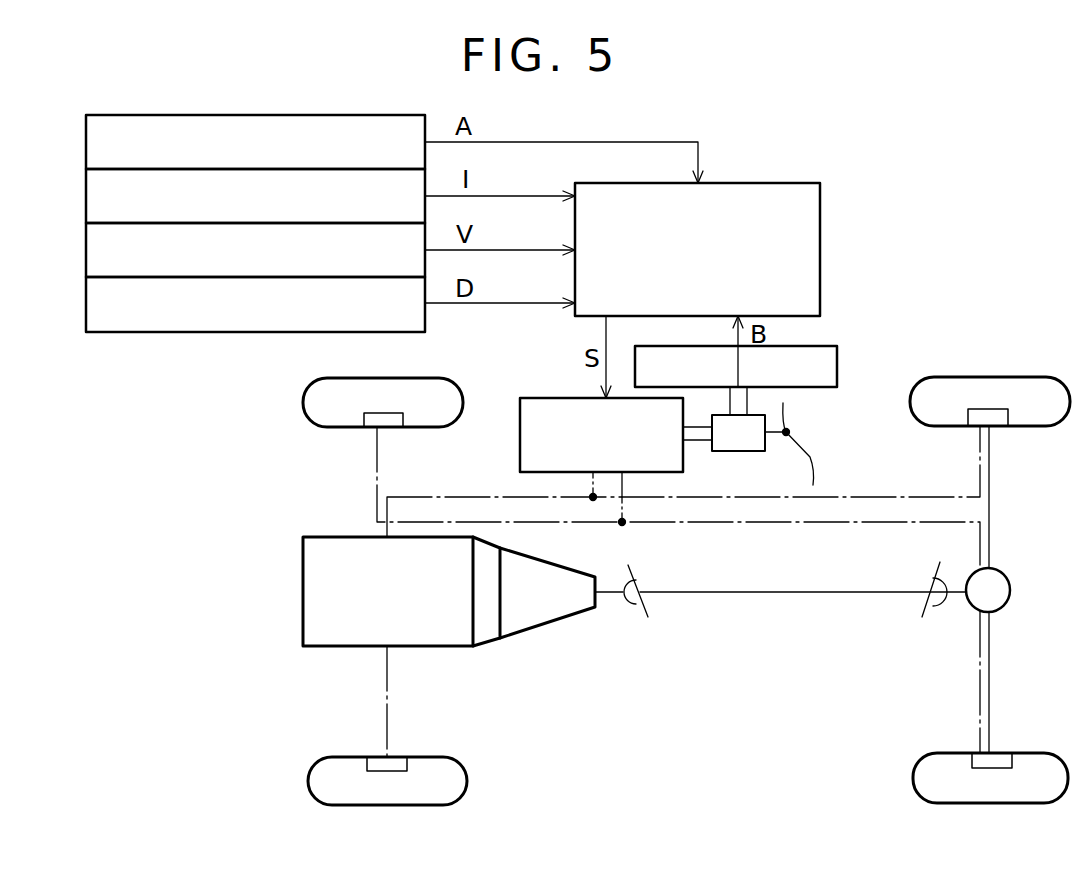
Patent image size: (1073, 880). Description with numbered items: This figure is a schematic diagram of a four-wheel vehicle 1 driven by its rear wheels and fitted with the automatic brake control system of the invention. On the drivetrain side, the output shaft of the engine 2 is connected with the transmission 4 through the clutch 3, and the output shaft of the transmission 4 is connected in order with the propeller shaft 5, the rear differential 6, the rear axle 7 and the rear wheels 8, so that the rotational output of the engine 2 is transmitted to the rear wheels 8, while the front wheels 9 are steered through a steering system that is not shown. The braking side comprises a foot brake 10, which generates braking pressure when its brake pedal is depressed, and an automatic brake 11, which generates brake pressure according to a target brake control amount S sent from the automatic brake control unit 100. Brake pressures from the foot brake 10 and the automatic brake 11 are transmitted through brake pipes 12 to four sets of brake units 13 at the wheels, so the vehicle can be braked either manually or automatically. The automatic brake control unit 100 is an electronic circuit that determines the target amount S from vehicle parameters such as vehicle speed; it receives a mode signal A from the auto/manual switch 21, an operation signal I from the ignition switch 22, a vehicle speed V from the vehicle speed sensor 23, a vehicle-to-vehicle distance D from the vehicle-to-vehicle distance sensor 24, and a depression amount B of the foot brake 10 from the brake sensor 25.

The four-wheel vehicle 1 is at (731, 743).
The engine 2 is at (460, 633).
The clutch 3 is at (490, 630).
The transmission 4 is at (573, 602).
The propeller shaft 5 is at (777, 598).
The rear differential 6 is at (1012, 568).
The rear axle 7 is at (992, 668).
The rear wheels 8 is at (1022, 377).
The front wheels 9 is at (337, 378).
The foot brake 10 is at (752, 452).
The automatic brake 11 is at (540, 397).
The brake pipes 12 is at (722, 498).
The brake units 13 is at (367, 420).
The auto/manual switch 21 is at (86, 130).
The ignition switch 22 is at (86, 190).
The vehicle speed sensor 23 is at (86, 244).
The vehicle-to-vehicle distance sensor 24 is at (86, 300).
The brake sensor 25 is at (838, 354).
The automatic brake control unit 100 is at (820, 213).